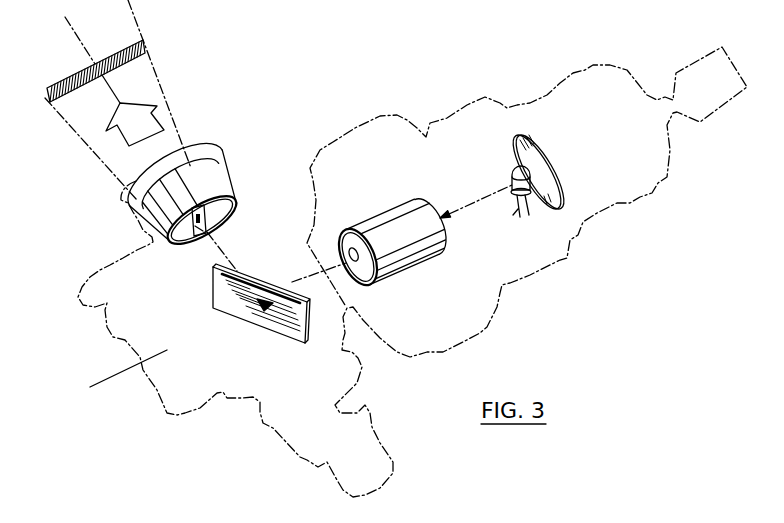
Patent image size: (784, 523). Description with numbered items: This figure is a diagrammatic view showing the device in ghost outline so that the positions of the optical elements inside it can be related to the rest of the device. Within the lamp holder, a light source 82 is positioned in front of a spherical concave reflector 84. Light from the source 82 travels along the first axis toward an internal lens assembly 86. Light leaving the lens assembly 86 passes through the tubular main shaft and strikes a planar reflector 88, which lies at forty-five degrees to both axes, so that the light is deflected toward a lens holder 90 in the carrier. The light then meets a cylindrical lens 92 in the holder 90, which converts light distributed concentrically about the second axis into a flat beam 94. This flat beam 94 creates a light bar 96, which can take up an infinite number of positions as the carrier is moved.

The light source 82 is at (511, 172).
The spherical concave reflector 84 is at (559, 170).
The internal lens assembly 86 is at (417, 264).
The planar reflector 88 is at (264, 323).
The lens holder 90 is at (214, 190).
The cylindrical lens 92 is at (208, 220).
The flat beam 94 is at (169, 100).
The light bar 96 is at (130, 47).